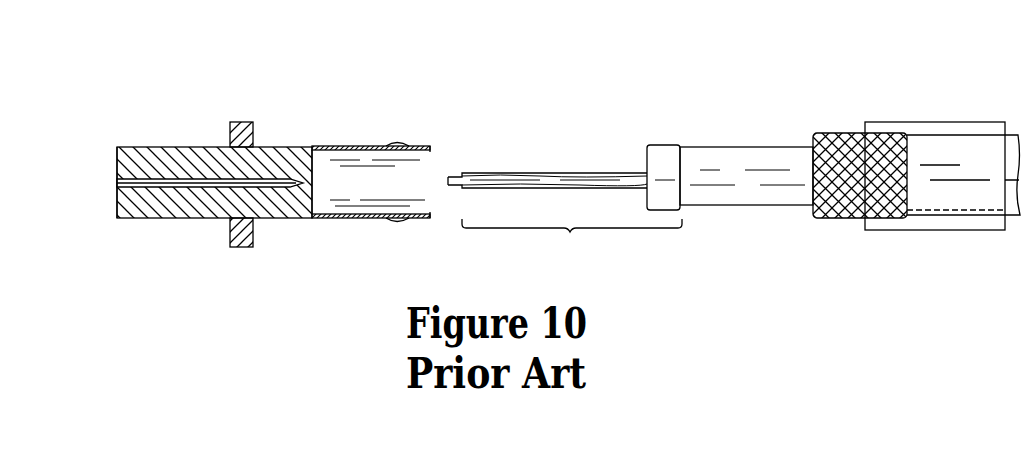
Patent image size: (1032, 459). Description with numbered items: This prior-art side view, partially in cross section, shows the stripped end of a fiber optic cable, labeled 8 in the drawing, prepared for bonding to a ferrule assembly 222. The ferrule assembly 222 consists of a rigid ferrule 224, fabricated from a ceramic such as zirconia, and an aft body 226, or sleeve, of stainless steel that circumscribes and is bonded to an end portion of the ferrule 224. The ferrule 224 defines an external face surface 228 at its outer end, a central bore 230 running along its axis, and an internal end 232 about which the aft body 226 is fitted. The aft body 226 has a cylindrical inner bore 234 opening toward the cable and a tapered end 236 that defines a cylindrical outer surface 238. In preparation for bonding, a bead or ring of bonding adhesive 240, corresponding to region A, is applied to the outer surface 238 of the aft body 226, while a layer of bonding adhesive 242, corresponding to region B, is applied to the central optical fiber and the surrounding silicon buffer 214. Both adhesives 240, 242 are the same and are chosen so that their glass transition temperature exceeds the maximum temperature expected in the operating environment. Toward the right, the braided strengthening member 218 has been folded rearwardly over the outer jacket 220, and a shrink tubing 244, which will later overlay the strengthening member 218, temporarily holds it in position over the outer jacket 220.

The coaxial cable connector 8 is at (855, 74).
The silicon buffer 214 is at (735, 206).
The strengthening member 218 is at (836, 133).
The outer jacket 220 is at (929, 216).
The ferrule assembly 222 is at (286, 72).
The rigid ferrule 224 is at (176, 152).
The aft body 226 is at (320, 147).
The external face surface 228 is at (117, 208).
The central bore 230 is at (120, 185).
The internal end 232 is at (278, 213).
The cylindrical inner bore 234 is at (323, 212).
The tapered end 236 is at (431, 218).
The cylindrical outer surface 238 is at (428, 147).
The bonding adhesive 240 is at (398, 144).
The bonding adhesive 242 is at (598, 172).
The shrink tubing 244 is at (917, 130).